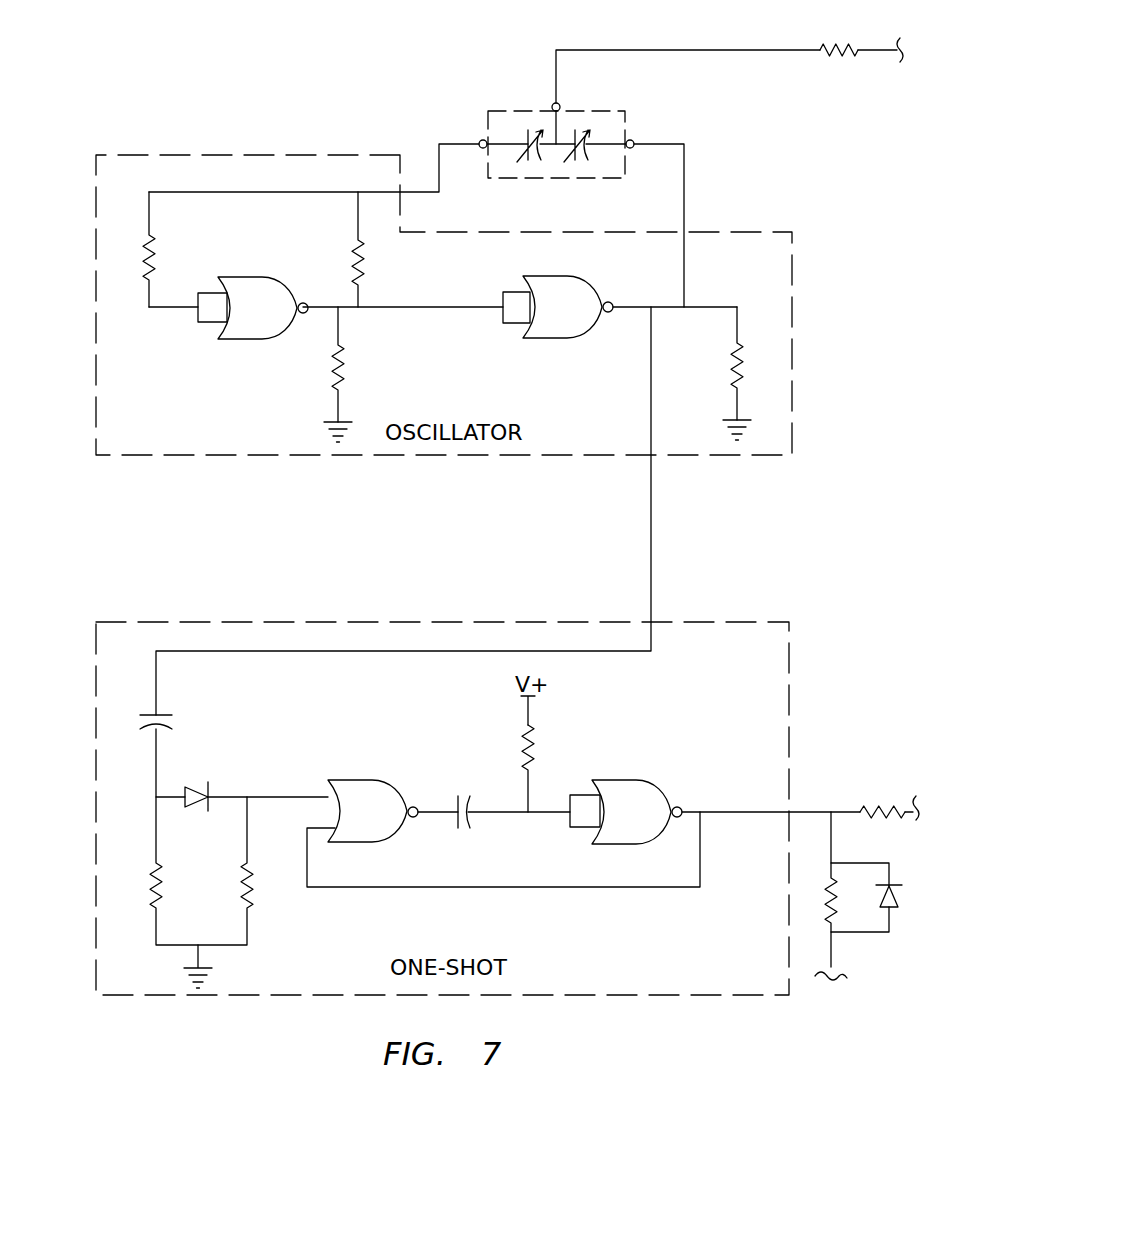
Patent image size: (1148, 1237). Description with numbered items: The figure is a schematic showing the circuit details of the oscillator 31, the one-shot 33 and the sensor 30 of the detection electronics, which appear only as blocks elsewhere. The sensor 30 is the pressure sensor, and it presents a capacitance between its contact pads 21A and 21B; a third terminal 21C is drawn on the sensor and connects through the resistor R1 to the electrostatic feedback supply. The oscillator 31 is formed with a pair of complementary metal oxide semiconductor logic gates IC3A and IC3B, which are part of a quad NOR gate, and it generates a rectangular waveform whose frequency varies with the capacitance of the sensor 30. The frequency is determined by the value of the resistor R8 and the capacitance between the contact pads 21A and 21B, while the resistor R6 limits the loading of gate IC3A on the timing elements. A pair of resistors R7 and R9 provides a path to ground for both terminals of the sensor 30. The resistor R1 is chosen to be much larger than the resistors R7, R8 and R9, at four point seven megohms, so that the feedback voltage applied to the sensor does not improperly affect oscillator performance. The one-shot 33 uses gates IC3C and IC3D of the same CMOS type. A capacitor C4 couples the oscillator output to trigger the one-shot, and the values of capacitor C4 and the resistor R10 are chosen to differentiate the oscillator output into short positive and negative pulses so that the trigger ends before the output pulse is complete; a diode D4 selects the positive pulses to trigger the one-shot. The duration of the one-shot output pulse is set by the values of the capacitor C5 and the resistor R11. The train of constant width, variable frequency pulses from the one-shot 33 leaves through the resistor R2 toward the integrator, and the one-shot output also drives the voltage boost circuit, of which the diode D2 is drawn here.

The sensor 30 is at (587, 111).
The contact pad 21A is at (481, 139).
The contact pad 21B is at (633, 139).
The third terminal 21C is at (549, 104).
The resistor R1 is at (840, 58).
The oscillator 31 is at (792, 364).
The resistor R6 is at (157, 257).
The resistor R8 is at (350, 264).
The resistor R7 is at (330, 368).
The CMOS logic gate IC3A is at (253, 343).
The CMOS logic gate IC3B is at (565, 343).
The resistor R9 is at (733, 375).
The one-shot 33 is at (789, 712).
The capacitor C4 is at (160, 713).
The diode D4 is at (214, 785).
The resistor R10 is at (160, 886).
The CMOS logic gate IC3C is at (373, 778).
The resistor R11 is at (538, 745).
The capacitor C5 is at (475, 820).
The CMOS logic gate IC3D is at (645, 779).
The resistor R2 is at (882, 805).
The diode D2 is at (900, 893).